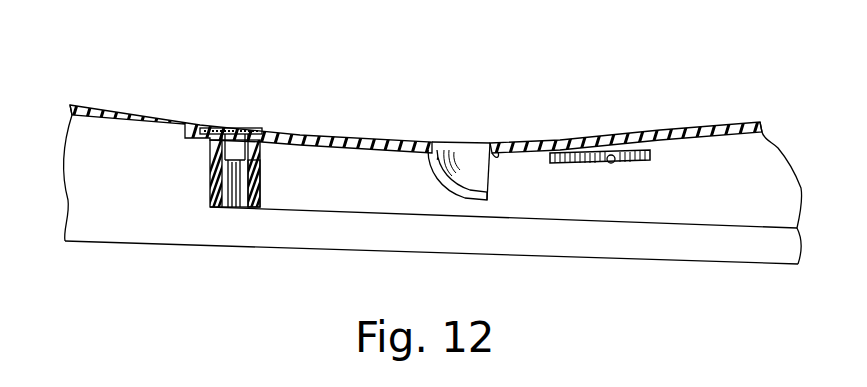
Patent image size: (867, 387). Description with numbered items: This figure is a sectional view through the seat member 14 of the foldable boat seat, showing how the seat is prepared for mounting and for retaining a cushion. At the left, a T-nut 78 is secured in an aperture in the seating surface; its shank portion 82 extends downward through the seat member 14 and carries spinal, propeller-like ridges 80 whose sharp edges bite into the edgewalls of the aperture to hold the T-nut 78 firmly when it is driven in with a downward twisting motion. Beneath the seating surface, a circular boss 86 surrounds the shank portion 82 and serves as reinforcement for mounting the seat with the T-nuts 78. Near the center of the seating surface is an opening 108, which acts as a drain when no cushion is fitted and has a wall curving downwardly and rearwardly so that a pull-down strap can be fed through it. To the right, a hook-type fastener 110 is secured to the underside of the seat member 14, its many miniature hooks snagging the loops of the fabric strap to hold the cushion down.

The seat member 14 is at (397, 100).
The T-nut 78 is at (256, 131).
The ridges 80 is at (222, 128).
The shank portion 82 is at (212, 158).
The bosses 86 is at (254, 188).
The opening 108 is at (478, 150).
The hook-type fastener 110 is at (637, 152).